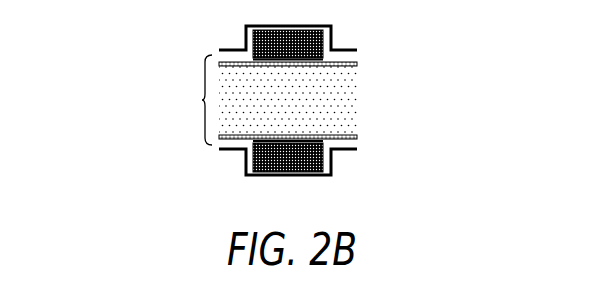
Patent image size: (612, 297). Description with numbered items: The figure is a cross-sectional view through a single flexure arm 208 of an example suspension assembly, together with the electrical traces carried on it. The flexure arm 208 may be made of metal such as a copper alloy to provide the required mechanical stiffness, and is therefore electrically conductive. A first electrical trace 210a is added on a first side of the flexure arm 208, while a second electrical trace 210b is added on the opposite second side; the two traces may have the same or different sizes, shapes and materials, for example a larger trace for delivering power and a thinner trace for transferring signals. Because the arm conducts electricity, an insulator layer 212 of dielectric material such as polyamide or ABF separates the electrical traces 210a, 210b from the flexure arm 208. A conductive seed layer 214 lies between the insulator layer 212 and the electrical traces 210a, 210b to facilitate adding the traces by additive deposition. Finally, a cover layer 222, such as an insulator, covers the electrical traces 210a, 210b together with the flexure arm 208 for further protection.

The flexure arm 208 is at (202, 100).
The first electrical trace 210a is at (246, 45).
The second electrical trace 210b is at (246, 159).
The insulator layer 212 is at (357, 63).
The seed layer 214 is at (323, 58).
The cover layer 222 is at (323, 165).